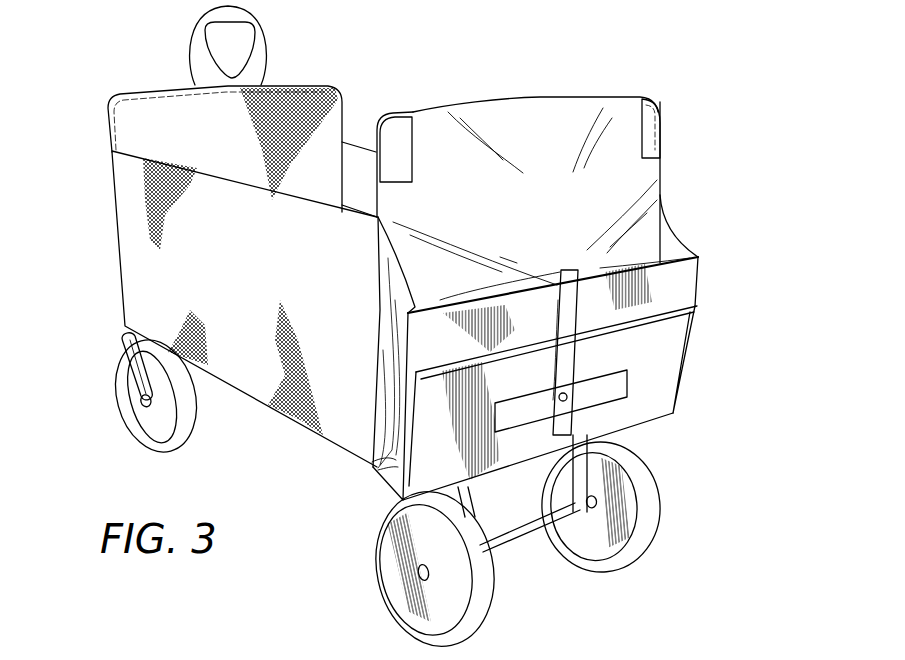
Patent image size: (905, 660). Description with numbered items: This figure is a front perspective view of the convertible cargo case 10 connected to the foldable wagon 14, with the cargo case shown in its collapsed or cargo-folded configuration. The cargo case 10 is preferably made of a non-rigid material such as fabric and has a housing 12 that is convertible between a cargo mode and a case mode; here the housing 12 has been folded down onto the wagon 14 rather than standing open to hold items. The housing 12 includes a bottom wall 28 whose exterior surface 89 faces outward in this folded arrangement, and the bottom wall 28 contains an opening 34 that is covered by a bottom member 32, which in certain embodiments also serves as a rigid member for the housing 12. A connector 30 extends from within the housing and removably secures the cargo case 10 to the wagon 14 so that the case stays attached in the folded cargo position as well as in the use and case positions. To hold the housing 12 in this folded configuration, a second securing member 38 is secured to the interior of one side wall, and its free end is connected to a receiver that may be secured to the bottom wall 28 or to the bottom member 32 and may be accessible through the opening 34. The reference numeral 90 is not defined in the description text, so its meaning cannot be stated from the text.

The convertible cargo case 10 is at (672, 217).
The housing 12 is at (697, 340).
The wagon 14 is at (140, 274).
The bottom wall 28 is at (668, 387).
The connector 30 is at (645, 130).
The bottom member 32 is at (510, 412).
The opening 34 is at (587, 397).
The second securing member 38 is at (573, 305).
The exterior surface 89 is at (432, 452).
The cover 90 is at (543, 97).